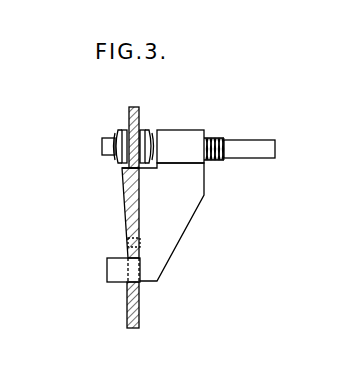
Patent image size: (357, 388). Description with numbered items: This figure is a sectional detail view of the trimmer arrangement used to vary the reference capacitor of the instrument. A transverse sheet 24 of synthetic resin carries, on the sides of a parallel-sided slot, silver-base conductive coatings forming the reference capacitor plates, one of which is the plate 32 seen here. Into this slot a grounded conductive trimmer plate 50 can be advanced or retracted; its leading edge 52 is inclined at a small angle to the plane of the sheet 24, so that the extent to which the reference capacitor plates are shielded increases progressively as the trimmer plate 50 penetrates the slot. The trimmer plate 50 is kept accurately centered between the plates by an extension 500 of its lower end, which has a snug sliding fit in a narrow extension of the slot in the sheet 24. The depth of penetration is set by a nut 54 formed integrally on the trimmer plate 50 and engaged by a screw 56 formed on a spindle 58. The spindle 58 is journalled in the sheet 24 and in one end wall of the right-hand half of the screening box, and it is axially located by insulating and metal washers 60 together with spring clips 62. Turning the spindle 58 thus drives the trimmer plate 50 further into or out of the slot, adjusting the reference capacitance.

The transverse sheet 24 is at (128, 310).
The reference capacitor plate 32 is at (130, 220).
The trimmer plate 50 is at (170, 233).
The leading edge 52 is at (129, 240).
The nut 54 is at (185, 136).
The screw 56 is at (208, 158).
The spindle 58 is at (248, 143).
The insulating and metal washers 60 is at (141, 130).
The spring clips 62 is at (117, 131).
The extension 500 is at (107, 270).